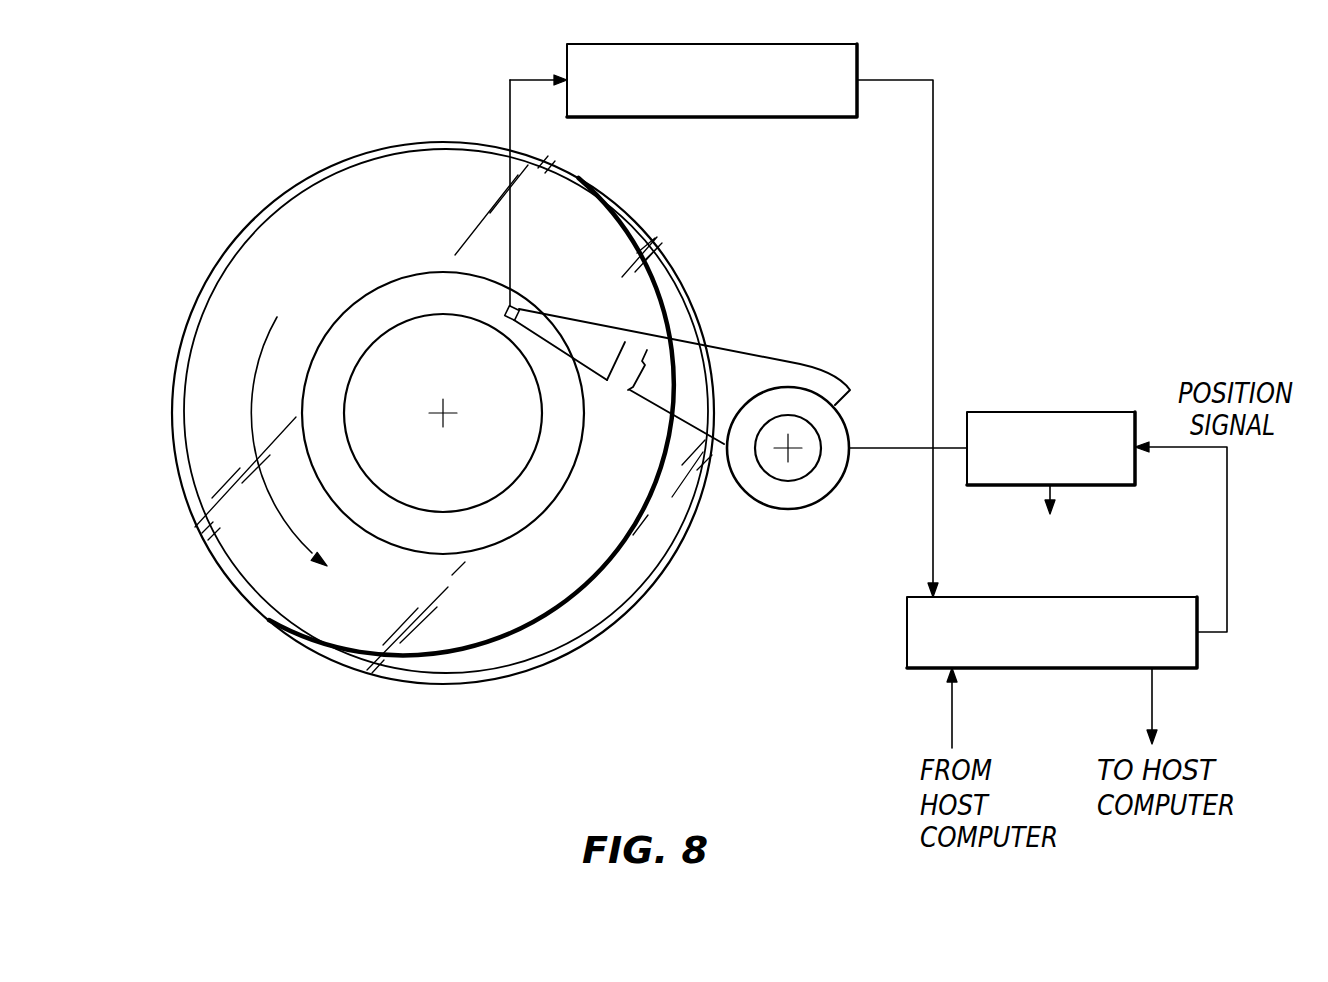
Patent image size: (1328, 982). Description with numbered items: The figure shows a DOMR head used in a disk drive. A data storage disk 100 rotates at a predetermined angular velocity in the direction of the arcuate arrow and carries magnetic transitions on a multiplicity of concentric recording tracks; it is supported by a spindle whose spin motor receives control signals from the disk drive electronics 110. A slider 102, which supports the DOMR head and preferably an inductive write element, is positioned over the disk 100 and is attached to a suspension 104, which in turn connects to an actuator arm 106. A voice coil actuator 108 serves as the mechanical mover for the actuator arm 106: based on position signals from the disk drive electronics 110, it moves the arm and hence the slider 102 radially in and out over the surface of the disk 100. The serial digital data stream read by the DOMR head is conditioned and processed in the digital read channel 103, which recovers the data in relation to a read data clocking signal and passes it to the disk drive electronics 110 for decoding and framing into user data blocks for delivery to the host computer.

The data storage disk 100 is at (611, 234).
The slider 102 is at (517, 303).
The digital read channel 103 is at (858, 58).
The suspension 104 is at (583, 342).
The actuator arm 106 is at (730, 373).
The voice coil actuator 108 is at (1004, 412).
The disk drive electronics 110 is at (1094, 597).